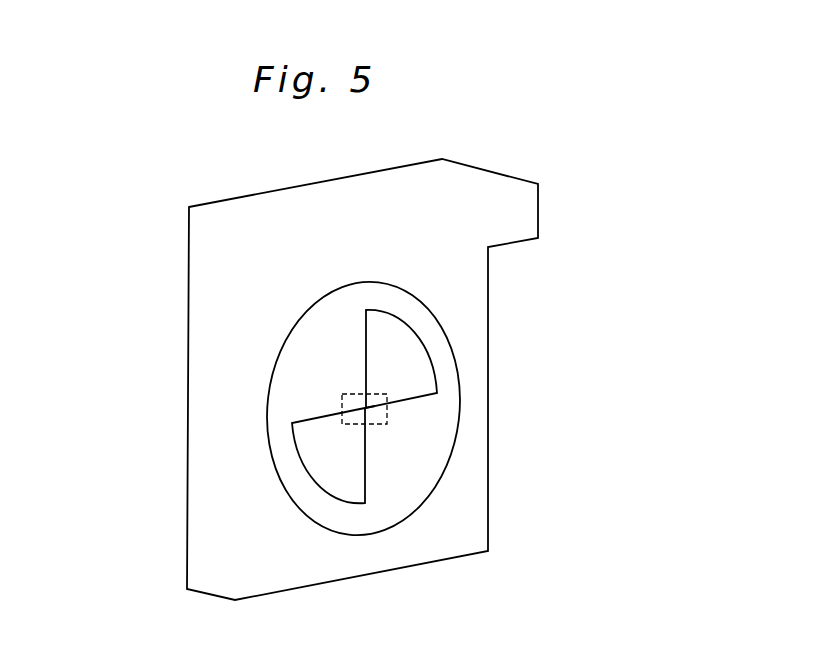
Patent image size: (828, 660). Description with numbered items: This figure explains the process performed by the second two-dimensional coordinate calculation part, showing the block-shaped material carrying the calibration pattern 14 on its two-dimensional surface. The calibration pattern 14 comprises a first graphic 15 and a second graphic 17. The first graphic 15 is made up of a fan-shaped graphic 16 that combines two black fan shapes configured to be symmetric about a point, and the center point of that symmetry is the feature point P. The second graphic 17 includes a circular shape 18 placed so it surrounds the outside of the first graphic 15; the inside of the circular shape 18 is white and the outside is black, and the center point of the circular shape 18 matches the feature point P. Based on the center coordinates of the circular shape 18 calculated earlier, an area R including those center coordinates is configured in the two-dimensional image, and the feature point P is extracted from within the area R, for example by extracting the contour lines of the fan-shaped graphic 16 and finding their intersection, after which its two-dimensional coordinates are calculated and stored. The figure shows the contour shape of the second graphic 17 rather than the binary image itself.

The calibration pattern 14 is at (479, 395).
The first graphic 15 is at (332, 422).
The fan-shaped graphic 16 is at (420, 354).
The second graphic 17 is at (445, 408).
The circular shape 18 is at (445, 462).
The feature point P is at (360, 407).
The area R is at (387, 410).